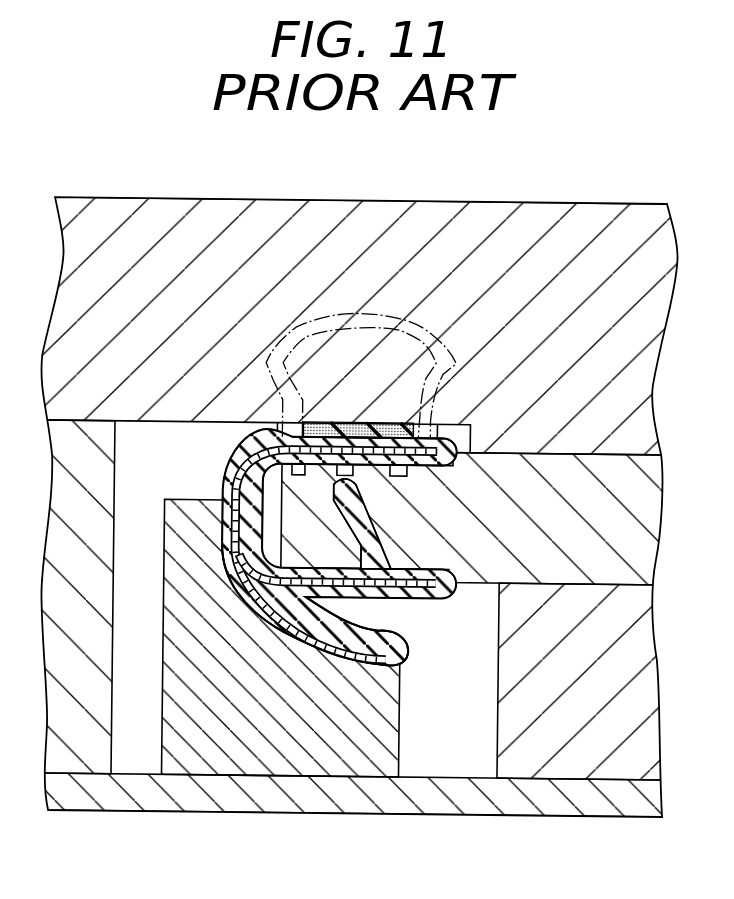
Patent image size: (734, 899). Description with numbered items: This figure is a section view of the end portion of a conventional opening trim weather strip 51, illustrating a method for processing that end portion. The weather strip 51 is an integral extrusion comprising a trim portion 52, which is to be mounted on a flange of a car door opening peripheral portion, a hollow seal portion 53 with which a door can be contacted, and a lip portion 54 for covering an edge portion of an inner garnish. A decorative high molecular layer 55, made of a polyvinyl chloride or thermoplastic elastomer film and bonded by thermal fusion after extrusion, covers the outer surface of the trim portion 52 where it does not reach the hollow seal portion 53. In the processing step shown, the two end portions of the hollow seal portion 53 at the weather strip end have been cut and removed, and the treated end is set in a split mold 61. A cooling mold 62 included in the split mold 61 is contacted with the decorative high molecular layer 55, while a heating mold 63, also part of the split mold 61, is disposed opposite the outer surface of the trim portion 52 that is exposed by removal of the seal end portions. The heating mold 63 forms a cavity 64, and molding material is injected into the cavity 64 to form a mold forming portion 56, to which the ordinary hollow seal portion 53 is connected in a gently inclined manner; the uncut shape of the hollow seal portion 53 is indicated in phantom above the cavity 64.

The opening trim weather strip 51 is at (323, 490).
The trim portion 52 is at (224, 475).
The hollow seal portion 53 is at (289, 331).
The lip portion 54 is at (403, 671).
The decorative high molecular layer 55 is at (258, 432).
The mold forming portion 56 is at (325, 436).
The split mold 61 is at (142, 195).
The cooling mold 62 is at (290, 767).
The heating mold 63 is at (577, 215).
The cavity 64 is at (346, 421).